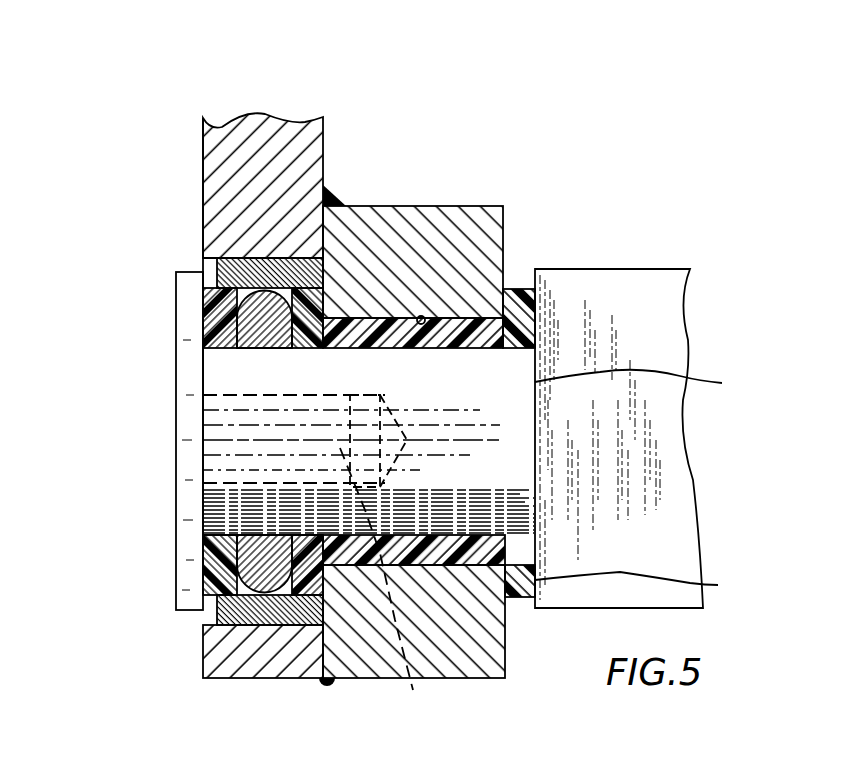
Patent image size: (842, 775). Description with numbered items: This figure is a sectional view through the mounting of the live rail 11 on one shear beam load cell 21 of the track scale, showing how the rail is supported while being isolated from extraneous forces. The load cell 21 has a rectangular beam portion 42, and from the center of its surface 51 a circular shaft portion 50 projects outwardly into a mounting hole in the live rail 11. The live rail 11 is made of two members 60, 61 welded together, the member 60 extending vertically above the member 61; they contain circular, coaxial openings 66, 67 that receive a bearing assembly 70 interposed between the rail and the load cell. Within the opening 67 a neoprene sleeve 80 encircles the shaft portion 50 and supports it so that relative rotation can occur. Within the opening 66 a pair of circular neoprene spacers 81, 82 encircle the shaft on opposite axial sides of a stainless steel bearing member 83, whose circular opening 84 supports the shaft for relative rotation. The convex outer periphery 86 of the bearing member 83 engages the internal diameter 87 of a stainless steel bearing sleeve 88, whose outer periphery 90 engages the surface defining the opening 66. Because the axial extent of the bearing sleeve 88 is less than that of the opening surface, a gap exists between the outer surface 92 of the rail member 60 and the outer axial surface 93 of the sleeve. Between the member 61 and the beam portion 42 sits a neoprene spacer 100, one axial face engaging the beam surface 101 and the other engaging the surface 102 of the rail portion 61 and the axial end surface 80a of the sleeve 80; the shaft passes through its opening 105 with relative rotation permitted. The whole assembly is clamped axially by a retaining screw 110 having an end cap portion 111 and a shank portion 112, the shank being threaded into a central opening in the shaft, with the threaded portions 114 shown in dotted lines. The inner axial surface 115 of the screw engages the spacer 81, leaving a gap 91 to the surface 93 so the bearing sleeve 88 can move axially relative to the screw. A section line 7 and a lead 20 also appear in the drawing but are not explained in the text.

The section line 7 is at (267, 77).
The live rail 11 is at (211, 112).
The valve body assembly 20 is at (393, 157).
The shear beam load cell 21 is at (668, 262).
The beam portion 42 is at (655, 453).
The shaft portion 50 is at (498, 330).
The surface 51 is at (522, 290).
The rail member 60 is at (215, 160).
The rail member 61 is at (390, 222).
The opening 66 is at (278, 266).
The opening 67 is at (421, 316).
The bearing assembly 70 is at (195, 555).
The neoprene sleeve 80 is at (482, 620).
The axial end surface 80a is at (510, 558).
The neoprene spacer 81 is at (220, 322).
The neoprene spacer 82 is at (305, 345).
The stainless steel bearing member 83 is at (242, 566).
The circular opening 84 is at (268, 520).
The outer periphery 86 is at (225, 650).
The internal diameter 87 is at (285, 600).
The stainless steel bearing sleeve 88 is at (215, 600).
The outer periphery 90 is at (330, 650).
The gap 91 is at (210, 282).
The outer surface 92 is at (203, 198).
The outer axial surface 93 is at (218, 268).
The neoprene spacer 100 is at (645, 584).
The beam surface 101 is at (512, 300).
The surface 102 is at (512, 626).
The opening 105 is at (648, 384).
The retaining screw 110 is at (195, 443).
The end cap portion 111 is at (182, 358).
The shank portion 112 is at (395, 581).
The threaded portions 114 is at (352, 392).
The inner axial surface 115 is at (208, 480).